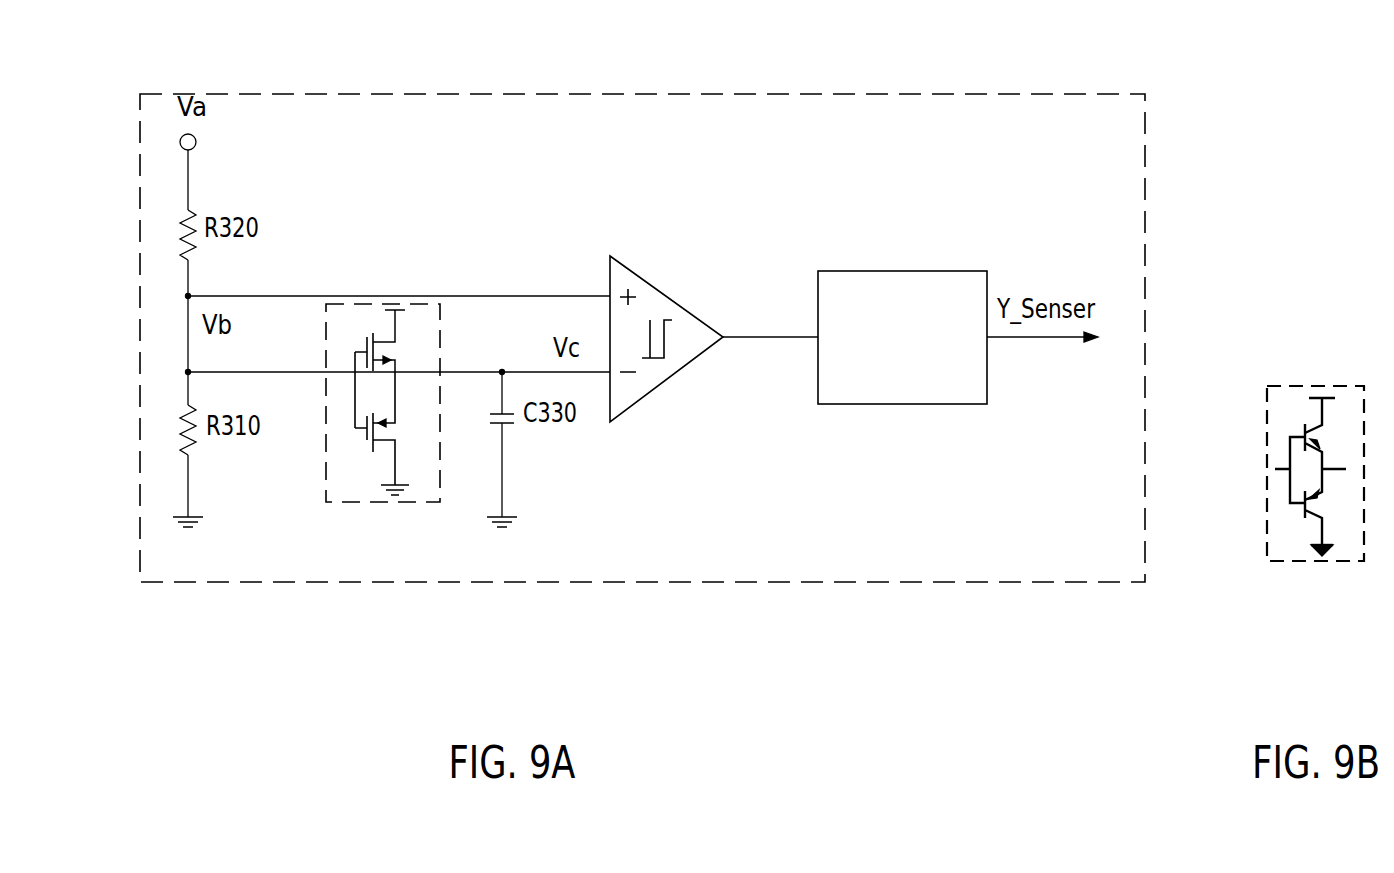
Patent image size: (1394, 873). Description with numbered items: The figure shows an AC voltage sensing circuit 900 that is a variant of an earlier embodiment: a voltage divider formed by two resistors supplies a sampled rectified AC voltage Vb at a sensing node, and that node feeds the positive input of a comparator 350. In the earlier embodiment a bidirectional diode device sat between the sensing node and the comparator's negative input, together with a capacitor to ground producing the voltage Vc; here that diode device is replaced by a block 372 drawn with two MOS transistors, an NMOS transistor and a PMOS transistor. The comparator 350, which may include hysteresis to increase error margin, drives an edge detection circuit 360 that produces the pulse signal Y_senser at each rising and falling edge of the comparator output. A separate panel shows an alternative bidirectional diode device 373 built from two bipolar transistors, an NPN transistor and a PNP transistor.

In FIG. 9A, the AC voltage sensing circuit 900 is at (601, 93).
In FIG. 9A, the comparator 350 is at (617, 253).
In FIG. 9A, the edge detection circuit 360 is at (898, 270).
In FIG. 9A, the MOS transistor switch block 372 is at (403, 502).
In FIG. 9B, the bidirectional diode device 373 is at (1312, 562).